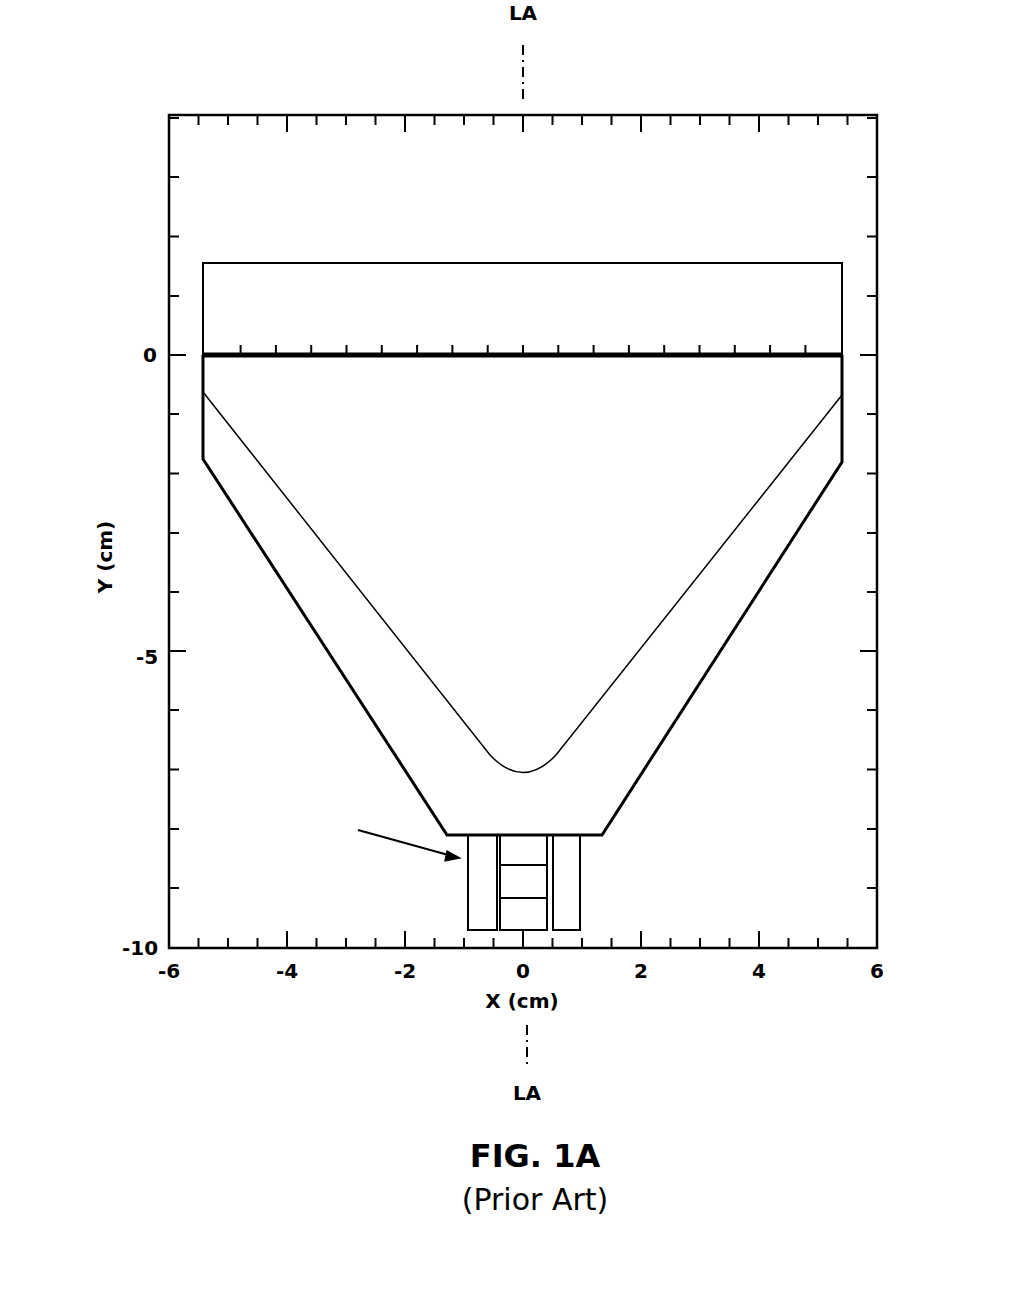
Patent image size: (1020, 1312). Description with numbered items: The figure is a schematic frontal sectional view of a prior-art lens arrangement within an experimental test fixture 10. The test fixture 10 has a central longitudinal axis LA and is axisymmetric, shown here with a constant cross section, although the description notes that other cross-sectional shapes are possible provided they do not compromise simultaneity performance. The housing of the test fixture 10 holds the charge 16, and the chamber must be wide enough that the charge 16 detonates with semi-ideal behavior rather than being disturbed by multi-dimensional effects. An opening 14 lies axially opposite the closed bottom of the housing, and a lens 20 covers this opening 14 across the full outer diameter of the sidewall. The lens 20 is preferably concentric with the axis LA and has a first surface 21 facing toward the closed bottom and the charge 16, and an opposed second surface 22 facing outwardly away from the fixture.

The experimental test fixture 10 is at (777, 1004).
The opening 14 is at (243, 371).
The charge 16 is at (523, 913).
The lens 20 is at (233, 299).
The first surface 21 is at (555, 357).
The second surface 22 is at (587, 263).